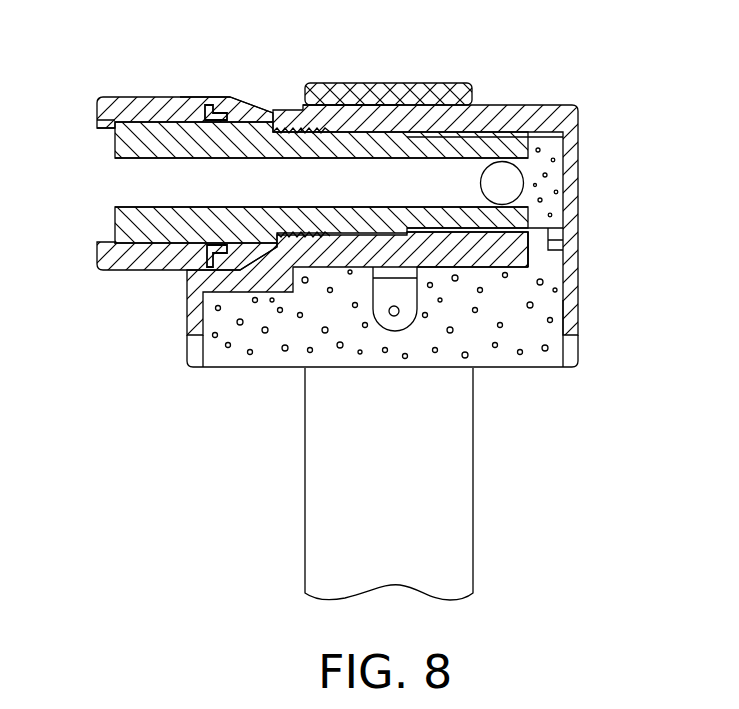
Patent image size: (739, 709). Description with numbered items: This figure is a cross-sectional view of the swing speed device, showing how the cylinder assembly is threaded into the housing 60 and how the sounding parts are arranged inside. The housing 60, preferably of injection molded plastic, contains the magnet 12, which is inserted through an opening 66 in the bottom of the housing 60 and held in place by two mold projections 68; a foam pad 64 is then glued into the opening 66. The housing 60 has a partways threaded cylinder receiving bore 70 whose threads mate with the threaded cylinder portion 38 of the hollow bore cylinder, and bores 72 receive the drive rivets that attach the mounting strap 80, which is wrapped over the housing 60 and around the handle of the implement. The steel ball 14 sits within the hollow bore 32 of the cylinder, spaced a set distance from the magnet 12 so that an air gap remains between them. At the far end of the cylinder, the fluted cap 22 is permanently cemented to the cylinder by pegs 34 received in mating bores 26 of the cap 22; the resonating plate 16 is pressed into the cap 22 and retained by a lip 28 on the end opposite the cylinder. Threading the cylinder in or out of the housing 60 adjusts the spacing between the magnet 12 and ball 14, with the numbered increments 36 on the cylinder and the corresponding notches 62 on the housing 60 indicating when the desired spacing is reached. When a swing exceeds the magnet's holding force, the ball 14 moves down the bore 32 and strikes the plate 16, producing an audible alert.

The magnet 12 is at (548, 198).
The steel ball 14 is at (510, 183).
The resonating plate 16 is at (112, 180).
The fluted cap 22 is at (137, 103).
The mating bores 26 is at (190, 103).
The lip 28 is at (102, 127).
The hollow bore 32 is at (452, 182).
The pegs 34 is at (218, 100).
The numbered increments 36 is at (257, 97).
The threaded cylinder portion 38 is at (350, 104).
The housing 60 is at (577, 318).
The notches 62 is at (285, 107).
The foam pad 64 is at (540, 345).
The opening 66 is at (515, 325).
The mold projections 68 is at (577, 272).
The cylinder receiving bore 70 is at (435, 235).
The bores 72 is at (392, 316).
The mounting strap 80 is at (442, 85).